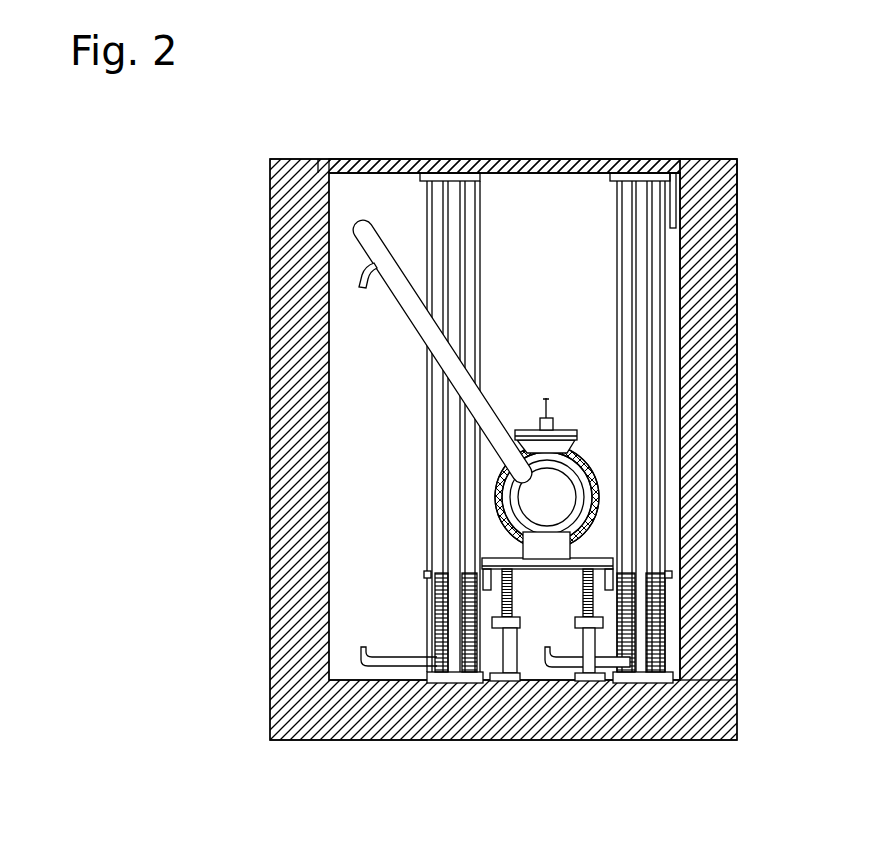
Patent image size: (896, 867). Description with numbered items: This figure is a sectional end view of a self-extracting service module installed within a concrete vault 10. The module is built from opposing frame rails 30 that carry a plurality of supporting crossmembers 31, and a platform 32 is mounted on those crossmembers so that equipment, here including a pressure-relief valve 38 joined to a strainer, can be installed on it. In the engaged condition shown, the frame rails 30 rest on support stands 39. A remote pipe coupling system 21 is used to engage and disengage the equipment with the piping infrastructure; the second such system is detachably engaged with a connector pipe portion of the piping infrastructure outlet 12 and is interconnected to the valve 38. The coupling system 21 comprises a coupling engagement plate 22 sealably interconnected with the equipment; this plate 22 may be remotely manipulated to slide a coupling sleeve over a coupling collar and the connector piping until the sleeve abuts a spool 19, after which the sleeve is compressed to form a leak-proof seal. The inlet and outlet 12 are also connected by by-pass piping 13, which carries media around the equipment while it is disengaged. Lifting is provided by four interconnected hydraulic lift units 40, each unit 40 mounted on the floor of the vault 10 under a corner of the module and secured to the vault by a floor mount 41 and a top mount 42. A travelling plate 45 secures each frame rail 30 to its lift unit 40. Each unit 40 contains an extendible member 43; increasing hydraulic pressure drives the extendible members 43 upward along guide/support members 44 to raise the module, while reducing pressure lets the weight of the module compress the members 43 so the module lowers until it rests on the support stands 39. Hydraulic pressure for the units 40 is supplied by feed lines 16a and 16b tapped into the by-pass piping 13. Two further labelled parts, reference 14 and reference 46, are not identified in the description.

The concrete vault 10 is at (297, 158).
The piping infrastructure outlet 12 is at (585, 496).
The by-pass piping 13 is at (352, 233).
The top plate 14 is at (363, 157).
The feed line 16a is at (356, 277).
The feed line 16b is at (392, 672).
The spool 19 is at (592, 478).
The remote pipe coupling system 21 is at (688, 437).
The coupling engagement plate 22 is at (587, 448).
The frame rail 30 is at (398, 608).
The supporting crossmember 31 is at (490, 570).
The platform 32 is at (498, 556).
The pressure-relief valve 38 is at (570, 428).
The support stand 39 is at (517, 655).
The hydraulic lift unit 40 is at (410, 617).
The floor mount 41 is at (485, 640).
The top mount 42 is at (660, 157).
The extendible member 43 is at (438, 592).
The guide/support member 44 is at (567, 371).
The travelling plate 45 is at (452, 573).
The side wall 46 is at (690, 205).